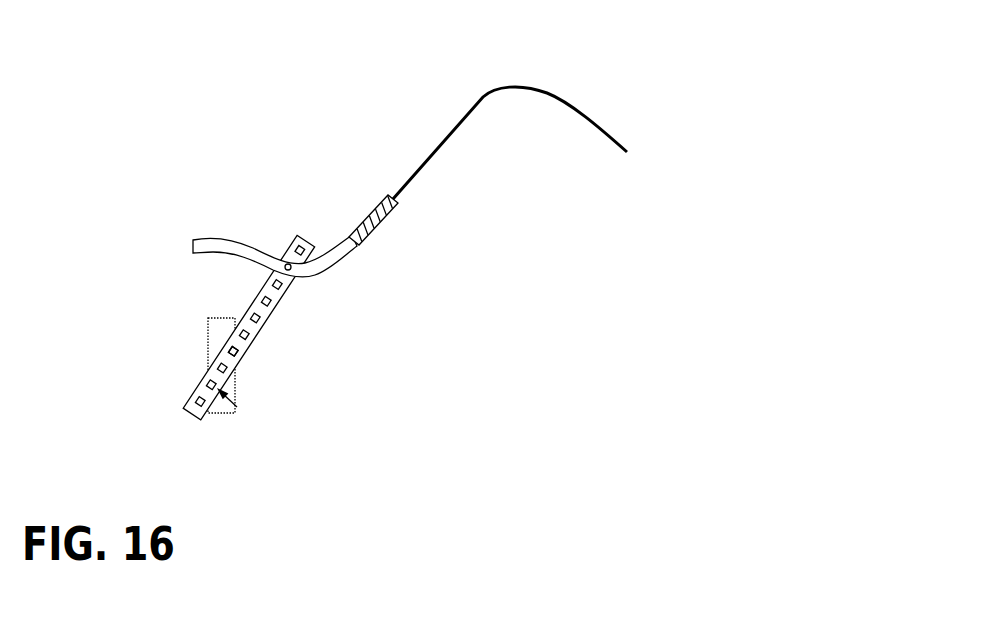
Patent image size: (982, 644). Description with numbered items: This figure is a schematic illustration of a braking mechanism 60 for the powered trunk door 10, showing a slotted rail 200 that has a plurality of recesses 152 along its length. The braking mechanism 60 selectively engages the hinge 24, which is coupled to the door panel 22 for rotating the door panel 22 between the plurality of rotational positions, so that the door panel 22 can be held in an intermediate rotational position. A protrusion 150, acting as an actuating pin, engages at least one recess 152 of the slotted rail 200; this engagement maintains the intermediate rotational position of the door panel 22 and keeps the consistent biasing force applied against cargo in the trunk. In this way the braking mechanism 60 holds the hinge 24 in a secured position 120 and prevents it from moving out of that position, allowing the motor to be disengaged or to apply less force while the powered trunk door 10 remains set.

The powered trunk door 10 is at (338, 133).
The door panel 22 is at (510, 85).
The hinge 24 is at (240, 215).
The braking mechanism 60 is at (177, 325).
The secured position 120 is at (163, 387).
The protrusion 150 is at (231, 373).
The recess 152 is at (237, 407).
The slotted rail 200 is at (266, 309).